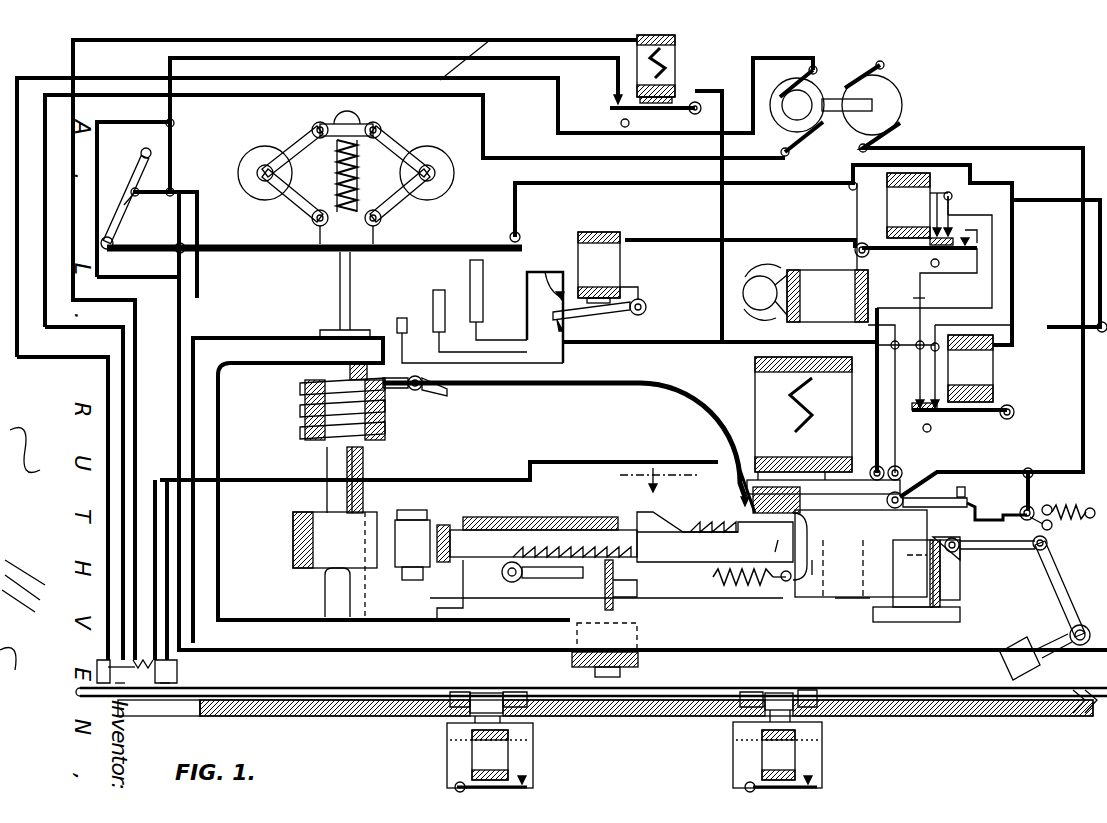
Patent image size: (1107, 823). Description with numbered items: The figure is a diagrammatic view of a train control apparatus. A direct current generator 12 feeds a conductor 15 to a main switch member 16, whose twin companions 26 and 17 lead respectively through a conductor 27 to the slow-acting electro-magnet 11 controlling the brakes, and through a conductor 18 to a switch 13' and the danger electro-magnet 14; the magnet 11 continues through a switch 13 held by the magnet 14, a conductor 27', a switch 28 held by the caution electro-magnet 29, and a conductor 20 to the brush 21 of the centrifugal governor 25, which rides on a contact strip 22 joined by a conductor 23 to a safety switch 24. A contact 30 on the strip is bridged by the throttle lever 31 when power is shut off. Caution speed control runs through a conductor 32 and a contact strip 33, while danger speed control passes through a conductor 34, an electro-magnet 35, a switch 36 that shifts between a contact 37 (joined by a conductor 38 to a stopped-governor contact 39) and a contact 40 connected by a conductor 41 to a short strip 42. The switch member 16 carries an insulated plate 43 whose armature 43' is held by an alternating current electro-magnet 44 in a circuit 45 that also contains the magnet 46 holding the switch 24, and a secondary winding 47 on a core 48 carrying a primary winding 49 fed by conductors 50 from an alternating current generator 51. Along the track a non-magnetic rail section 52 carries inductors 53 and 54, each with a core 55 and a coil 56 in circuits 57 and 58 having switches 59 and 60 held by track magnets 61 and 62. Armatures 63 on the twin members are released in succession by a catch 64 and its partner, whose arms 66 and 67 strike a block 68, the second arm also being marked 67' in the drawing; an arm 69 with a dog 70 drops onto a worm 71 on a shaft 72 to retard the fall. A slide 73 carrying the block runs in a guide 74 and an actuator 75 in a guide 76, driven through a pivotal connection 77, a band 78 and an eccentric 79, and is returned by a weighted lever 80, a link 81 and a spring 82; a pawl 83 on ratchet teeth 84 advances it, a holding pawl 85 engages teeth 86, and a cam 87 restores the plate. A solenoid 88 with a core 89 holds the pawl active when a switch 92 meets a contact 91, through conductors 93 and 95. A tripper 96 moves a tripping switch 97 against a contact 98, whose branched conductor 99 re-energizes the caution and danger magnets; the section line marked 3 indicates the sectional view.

The electro-magnet 11 is at (805, 293).
The direct current generator 12 is at (880, 92).
The switch 13 is at (908, 295).
The switch 13' is at (927, 255).
The danger electro-magnet 14 is at (887, 215).
The conductor 15 is at (1083, 310).
The switch member 16 is at (860, 555).
The switch member 17 is at (880, 468).
The conductor 18 is at (993, 265).
The conductor 20 is at (608, 183).
The contact arm or brush 21 is at (428, 245).
The contact strip 22 is at (199, 222).
The conductor 23 is at (172, 150).
The safety switch 24 is at (612, 109).
The centrifugal speed control governor 25 is at (392, 148).
The switch member 26 is at (839, 477).
The conductor 27 is at (847, 394).
The conductor 27' is at (941, 295).
The switch 28 is at (945, 414).
The caution electro-magnet 29 is at (993, 375).
The contact 30 is at (136, 195).
The throttle lever or control member 31 is at (141, 158).
The conductor 32 is at (710, 345).
The contact strip 33 is at (483, 300).
The conductor 34 is at (770, 240).
The electro-magnet 35 is at (578, 252).
The switch 36 is at (600, 318).
The contact 37 is at (566, 333).
The conductor 38 is at (534, 368).
The contact 39 is at (397, 320).
The contact 40 is at (545, 305).
The conductor 41 is at (525, 322).
The contact strip 42 is at (433, 297).
The plate 43 is at (684, 487).
The armature 43' is at (817, 580).
The alternating current electro-magnet 44 is at (755, 400).
The circuit 45 is at (73, 60).
The alternating current electro-magnet 46 is at (637, 85).
The secondary coil or winding 47 is at (177, 667).
The core 48 is at (165, 682).
The primary coil or winding 49 is at (120, 675).
The conductors 50 is at (532, 132).
The alternating or changing current generator 51 is at (778, 95).
The non-magnetic rail section 52 is at (591, 688).
The inductor 53 is at (490, 686).
The inductor 54 is at (780, 685).
The core 55 is at (601, 683).
The choke coil or winding 56 is at (522, 692).
The circuit 57 is at (447, 752).
The circuit 58 is at (733, 755).
The switch 59 is at (535, 787).
The switch 60 is at (820, 787).
The track electro-magnet 61 is at (510, 755).
The track electro-magnet 62 is at (800, 755).
The armatures 63 is at (826, 468).
The catch or hook 64 is at (763, 467).
The arm 66 is at (785, 585).
The arm 67 is at (774, 546).
The piston rod 67' is at (760, 549).
The block or enlargement 68 is at (702, 548).
The arm 69 is at (700, 412).
The pivoted dog 70 is at (406, 392).
The worm or helix 71 is at (385, 442).
The vertical shaft 72 is at (333, 498).
The reciprocatory bar or slide 73 is at (562, 530).
The guide 74 is at (940, 575).
The reciprocatory actuator 75 is at (444, 525).
The guide 76 is at (505, 518).
The pivotal connection 77 is at (412, 583).
The band 78 is at (322, 572).
The eccentric 79 is at (292, 554).
The weighted lever 80 is at (1062, 598).
The link 81 is at (1005, 550).
The spring 82 is at (730, 580).
The pawl 83 is at (548, 578).
The ratchet teeth 84 is at (595, 530).
The holding pawl 85 is at (740, 510).
The ratchet teeth 86 is at (710, 533).
The inclined cam 87 is at (663, 503).
The solenoid 88 is at (640, 665).
The core 89 is at (625, 592).
The contact 91 is at (967, 493).
The insulated switch 92 is at (957, 500).
The conductor 93 is at (835, 598).
The conductor 95 is at (179, 332).
The tripper 96 is at (1068, 555).
The tripping switch 97 is at (1035, 508).
The contact 98 is at (1052, 527).
The branched conductor 99 is at (1040, 200).
The section line 3 is at (988, 472).